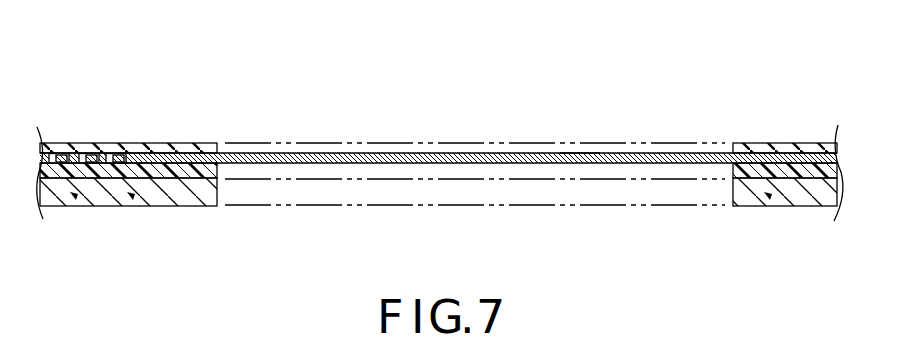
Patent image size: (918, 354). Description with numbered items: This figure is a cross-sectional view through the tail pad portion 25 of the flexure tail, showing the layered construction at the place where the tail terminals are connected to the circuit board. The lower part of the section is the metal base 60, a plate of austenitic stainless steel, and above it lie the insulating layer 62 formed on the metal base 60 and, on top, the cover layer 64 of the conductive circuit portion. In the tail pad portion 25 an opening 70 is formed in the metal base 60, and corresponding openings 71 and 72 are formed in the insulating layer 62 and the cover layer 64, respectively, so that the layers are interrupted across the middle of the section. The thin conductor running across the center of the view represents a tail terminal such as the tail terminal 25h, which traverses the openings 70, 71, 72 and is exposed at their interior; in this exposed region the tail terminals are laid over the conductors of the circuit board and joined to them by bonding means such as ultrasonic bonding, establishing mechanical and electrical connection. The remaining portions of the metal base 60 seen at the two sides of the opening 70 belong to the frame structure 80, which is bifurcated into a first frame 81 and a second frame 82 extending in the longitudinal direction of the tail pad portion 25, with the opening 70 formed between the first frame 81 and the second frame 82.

The tail pad portion 25 is at (463, 96).
The tail terminal 25h is at (575, 153).
The metal base 60 is at (134, 207).
The insulating layer 62 is at (182, 168).
The cover layer 64 is at (184, 143).
The opening 70 is at (434, 197).
The opening 71 is at (517, 176).
The opening 72 is at (357, 152).
The frame structure 80 is at (750, 214).
The first frame 81 is at (805, 207).
The second frame 82 is at (76, 207).